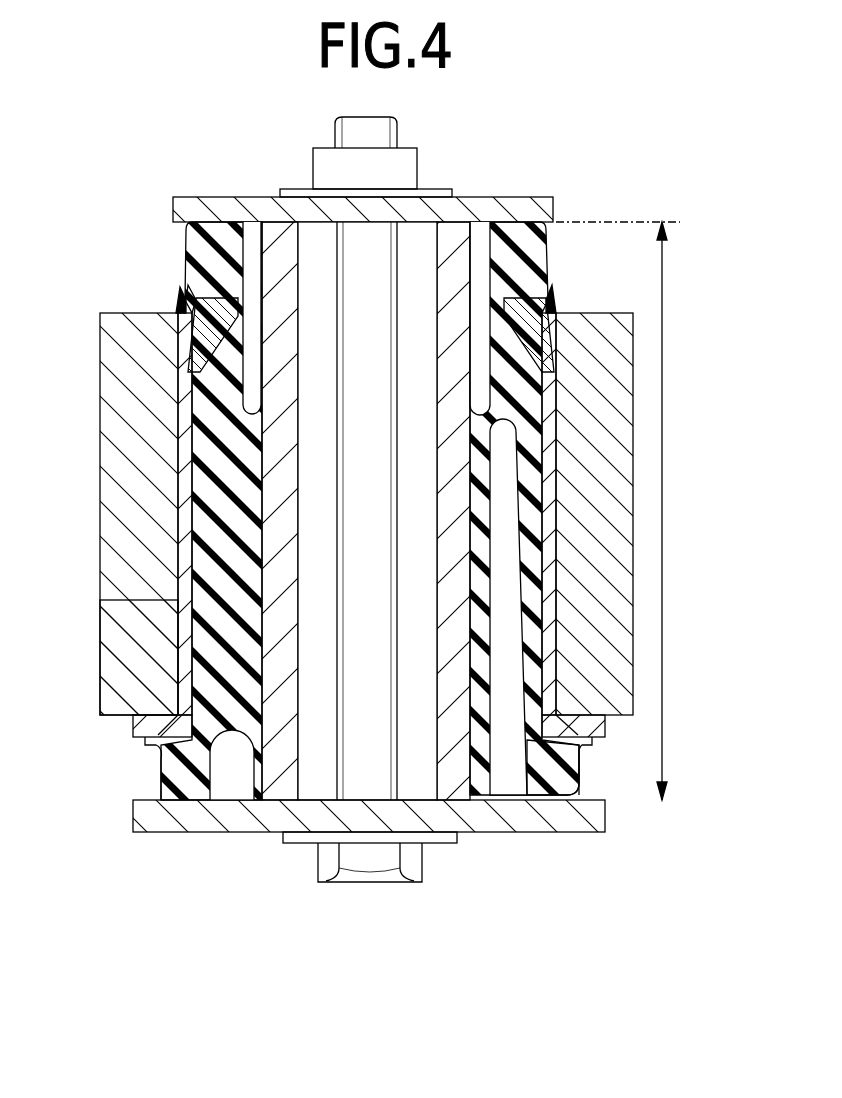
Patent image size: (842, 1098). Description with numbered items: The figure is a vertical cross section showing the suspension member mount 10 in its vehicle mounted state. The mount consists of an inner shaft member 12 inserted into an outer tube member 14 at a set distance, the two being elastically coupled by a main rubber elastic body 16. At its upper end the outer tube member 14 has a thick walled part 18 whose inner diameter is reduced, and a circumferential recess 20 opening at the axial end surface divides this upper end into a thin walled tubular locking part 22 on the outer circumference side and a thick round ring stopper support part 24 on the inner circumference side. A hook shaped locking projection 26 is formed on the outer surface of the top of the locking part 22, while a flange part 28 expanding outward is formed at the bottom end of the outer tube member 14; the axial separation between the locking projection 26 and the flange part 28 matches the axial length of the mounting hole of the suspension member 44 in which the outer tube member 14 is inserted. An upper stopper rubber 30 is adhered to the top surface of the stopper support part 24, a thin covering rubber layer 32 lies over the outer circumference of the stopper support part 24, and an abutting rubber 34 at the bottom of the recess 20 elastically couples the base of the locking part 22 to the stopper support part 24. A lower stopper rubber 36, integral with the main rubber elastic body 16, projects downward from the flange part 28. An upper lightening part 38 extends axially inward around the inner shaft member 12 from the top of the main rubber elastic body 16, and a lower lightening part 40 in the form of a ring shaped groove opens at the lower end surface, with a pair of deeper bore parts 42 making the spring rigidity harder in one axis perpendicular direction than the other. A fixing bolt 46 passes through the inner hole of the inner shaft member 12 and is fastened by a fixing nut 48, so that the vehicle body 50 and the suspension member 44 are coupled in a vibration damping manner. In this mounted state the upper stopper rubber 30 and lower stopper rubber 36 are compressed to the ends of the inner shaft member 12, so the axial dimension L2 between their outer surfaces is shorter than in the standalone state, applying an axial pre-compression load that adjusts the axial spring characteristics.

The suspension member mount 10 is at (565, 238).
The inner shaft member 12 is at (278, 220).
The outer tube member 14 is at (178, 486).
The main rubber elastic body 16 is at (216, 563).
The thick walled part 18 is at (560, 344).
The recess 20 is at (181, 292).
The locking part 22 is at (560, 294).
The stopper support part 24 is at (522, 335).
The locking projection 26 is at (176, 300).
The flange part 28 is at (594, 726).
The upper stopper rubber 30 is at (215, 237).
The covering rubber layer 32 is at (195, 322).
The abutting rubber 34 is at (545, 355).
The lower stopper rubber 36 is at (556, 796).
The upper lightening part 38 is at (488, 330).
The lower lightening part 40 is at (250, 728).
The bore part 42 is at (493, 680).
The suspension member 44 is at (120, 652).
The fixing bolt 46 is at (355, 882).
The fixing nut 48 is at (402, 160).
The vehicle body 50 is at (160, 825).
The axial dimension in vehicle mounted state L2 is at (676, 511).